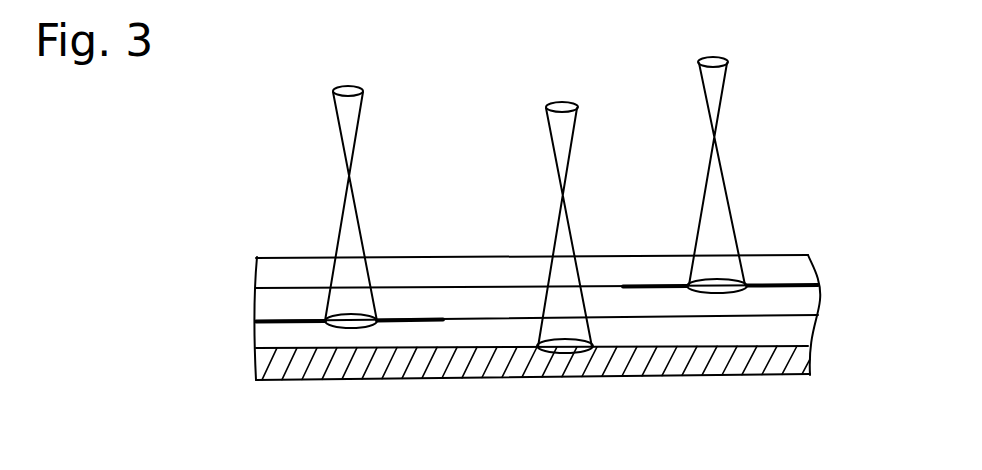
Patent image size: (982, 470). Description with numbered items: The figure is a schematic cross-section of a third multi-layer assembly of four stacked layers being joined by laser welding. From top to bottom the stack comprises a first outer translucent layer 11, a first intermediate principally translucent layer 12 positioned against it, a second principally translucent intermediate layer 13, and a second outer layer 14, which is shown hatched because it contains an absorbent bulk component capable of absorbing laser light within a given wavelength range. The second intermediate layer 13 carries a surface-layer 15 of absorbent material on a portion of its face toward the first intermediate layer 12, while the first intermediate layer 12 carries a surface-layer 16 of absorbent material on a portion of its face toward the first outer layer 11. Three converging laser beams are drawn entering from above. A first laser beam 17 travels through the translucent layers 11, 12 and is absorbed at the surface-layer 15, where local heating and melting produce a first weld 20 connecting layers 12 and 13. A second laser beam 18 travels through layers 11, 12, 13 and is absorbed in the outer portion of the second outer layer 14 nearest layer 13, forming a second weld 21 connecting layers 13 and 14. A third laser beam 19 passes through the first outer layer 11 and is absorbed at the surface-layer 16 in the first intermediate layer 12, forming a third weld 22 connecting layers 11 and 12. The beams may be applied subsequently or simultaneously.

The first outer translucent layer 11 is at (267, 278).
The first intermediate principally translucent layer 12 is at (267, 307).
The second principally translucent intermediate layer 13 is at (270, 337).
The second outer layer 14 is at (257, 360).
The surface-layer of absorbent material 15 is at (250, 322).
The surface-layer of absorbent material 16 is at (818, 287).
The first laser beam 17 is at (347, 113).
The second laser beam 18 is at (562, 140).
The third laser beam 19 is at (713, 88).
The first weld 20 is at (353, 328).
The second weld 21 is at (563, 348).
The third weld 22 is at (727, 288).